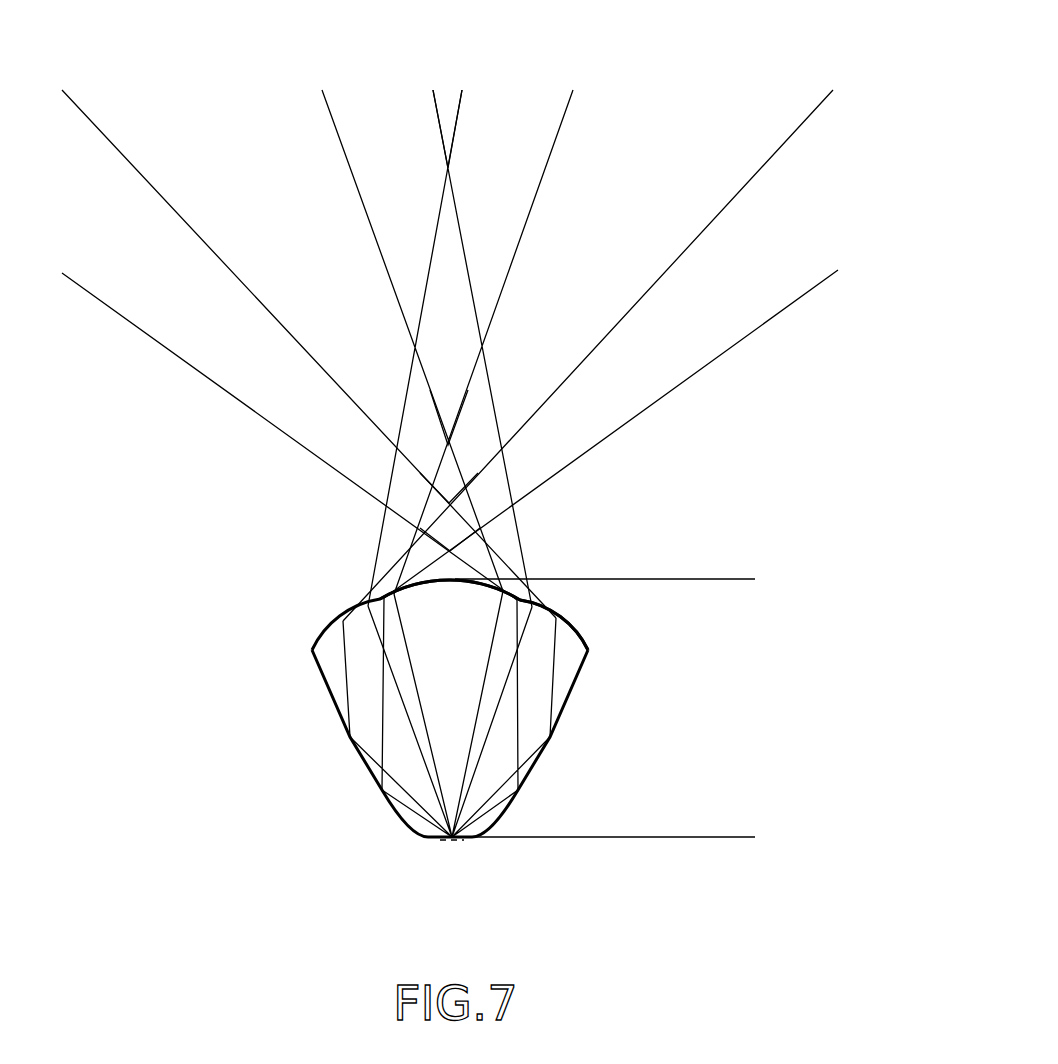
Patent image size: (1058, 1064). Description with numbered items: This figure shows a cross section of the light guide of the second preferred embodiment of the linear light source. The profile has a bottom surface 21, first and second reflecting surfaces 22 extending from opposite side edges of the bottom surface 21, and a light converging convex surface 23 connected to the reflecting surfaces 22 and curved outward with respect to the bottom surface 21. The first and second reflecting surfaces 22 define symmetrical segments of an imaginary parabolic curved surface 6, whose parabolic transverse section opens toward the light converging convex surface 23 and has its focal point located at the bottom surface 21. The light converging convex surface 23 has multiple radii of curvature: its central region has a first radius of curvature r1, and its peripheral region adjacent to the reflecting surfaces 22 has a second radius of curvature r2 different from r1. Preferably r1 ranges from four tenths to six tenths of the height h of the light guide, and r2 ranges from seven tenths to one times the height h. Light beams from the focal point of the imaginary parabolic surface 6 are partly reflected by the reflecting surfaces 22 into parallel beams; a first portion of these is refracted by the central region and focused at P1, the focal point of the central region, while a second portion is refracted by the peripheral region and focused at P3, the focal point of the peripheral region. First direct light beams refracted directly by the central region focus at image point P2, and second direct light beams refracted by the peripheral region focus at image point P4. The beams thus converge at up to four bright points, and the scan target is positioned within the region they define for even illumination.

The imaginary parabolic curved surface 6 is at (455, 841).
The bottom surface 21 is at (467, 838).
The first and second reflecting surfaces 22 is at (333, 728).
The light converging convex surface 23 is at (372, 595).
The first radius of curvature r1 is at (472, 598).
The second radius of curvature r2 is at (583, 630).
The height of the light guide h is at (748, 582).
The focal point of the central region P1 is at (454, 551).
The image point of the central region P2 is at (446, 445).
The focal point of the peripheral region P3 is at (454, 503).
The image point of the peripheral region P4 is at (446, 168).